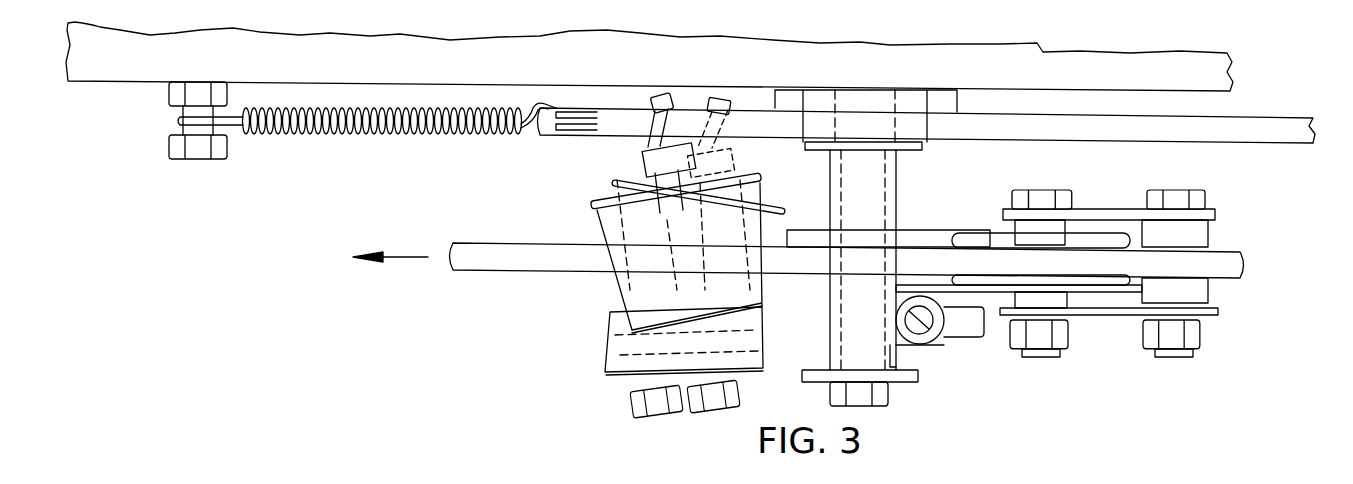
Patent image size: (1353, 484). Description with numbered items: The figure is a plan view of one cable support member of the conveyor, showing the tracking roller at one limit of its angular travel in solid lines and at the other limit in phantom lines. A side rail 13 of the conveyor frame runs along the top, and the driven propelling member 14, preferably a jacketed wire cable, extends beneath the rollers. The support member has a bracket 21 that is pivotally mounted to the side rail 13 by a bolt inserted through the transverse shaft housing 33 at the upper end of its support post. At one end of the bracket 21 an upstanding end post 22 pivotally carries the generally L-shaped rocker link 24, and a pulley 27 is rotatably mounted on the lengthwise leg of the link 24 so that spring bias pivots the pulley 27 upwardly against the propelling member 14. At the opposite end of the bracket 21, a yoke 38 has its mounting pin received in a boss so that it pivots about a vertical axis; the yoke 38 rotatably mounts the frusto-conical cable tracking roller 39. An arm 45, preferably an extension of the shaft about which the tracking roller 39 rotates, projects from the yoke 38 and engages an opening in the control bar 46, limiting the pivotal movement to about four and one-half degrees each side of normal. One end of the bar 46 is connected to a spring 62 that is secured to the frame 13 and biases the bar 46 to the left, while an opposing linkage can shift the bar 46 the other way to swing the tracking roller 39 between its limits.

The side rail 13 is at (1100, 56).
The propelling member 14 is at (509, 274).
The bracket 21 is at (928, 230).
The end post 22 is at (1210, 242).
The rocker link 24 is at (1222, 214).
The pulley 27 is at (982, 240).
The transverse shaft housing 33 is at (828, 192).
The yoke 38 is at (748, 372).
The cable tracking roller 39 is at (600, 200).
The arm 45 is at (664, 97).
The control bar 46 is at (1113, 140).
The spring 62 is at (360, 138).